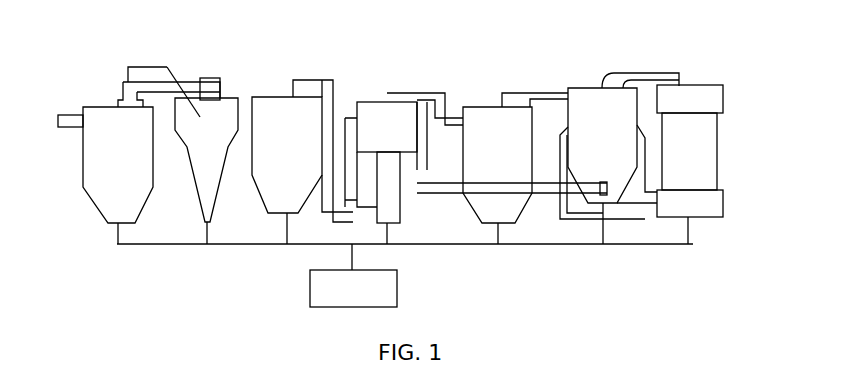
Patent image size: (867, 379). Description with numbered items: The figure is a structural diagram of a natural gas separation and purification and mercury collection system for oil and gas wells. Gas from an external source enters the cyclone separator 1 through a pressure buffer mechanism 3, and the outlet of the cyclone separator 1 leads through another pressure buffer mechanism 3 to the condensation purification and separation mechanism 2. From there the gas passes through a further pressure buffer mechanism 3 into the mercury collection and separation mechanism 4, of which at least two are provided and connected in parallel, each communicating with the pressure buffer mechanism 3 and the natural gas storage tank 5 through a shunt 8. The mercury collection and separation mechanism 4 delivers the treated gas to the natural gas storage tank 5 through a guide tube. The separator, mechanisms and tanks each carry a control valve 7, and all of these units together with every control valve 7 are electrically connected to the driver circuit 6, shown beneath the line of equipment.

The cyclone separator 1 is at (143, 67).
The condensation purification and separation mechanism 2 is at (387, 123).
The pressure buffer mechanism 3 is at (100, 152).
The mercury collection and separation mechanism 4 is at (598, 115).
The natural gas storage tank 5 is at (717, 150).
The driver circuit 6 is at (310, 292).
The control valve 7 is at (80, 113).
The shunt 8 is at (682, 83).